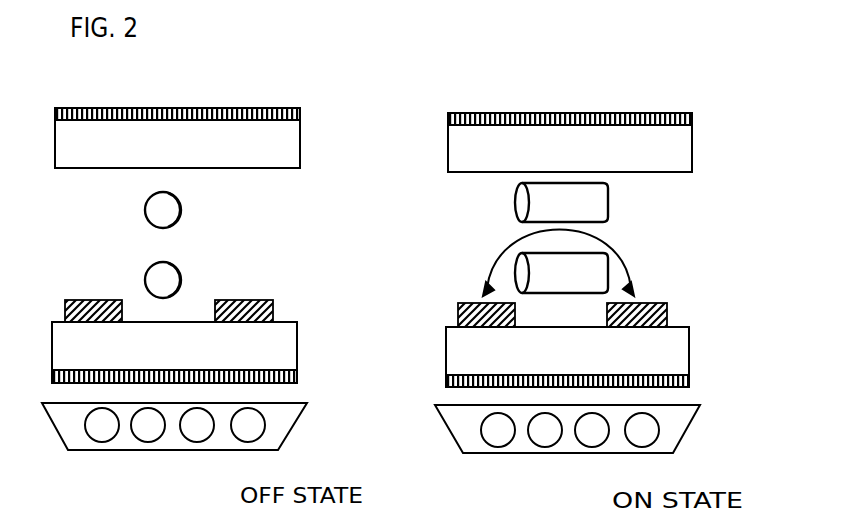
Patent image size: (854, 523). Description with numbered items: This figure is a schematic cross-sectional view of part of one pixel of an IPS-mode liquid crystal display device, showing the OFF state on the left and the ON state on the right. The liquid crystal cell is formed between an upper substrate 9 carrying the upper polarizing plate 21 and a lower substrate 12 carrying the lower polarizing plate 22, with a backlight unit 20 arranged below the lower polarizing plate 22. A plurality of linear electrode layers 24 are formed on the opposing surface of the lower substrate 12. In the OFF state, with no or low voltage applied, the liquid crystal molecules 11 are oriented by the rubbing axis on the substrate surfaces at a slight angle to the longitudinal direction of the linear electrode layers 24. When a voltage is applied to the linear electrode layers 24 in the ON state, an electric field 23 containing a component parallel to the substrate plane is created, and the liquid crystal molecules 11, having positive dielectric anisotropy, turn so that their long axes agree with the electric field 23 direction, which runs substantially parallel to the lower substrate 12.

The upper substrate of liquid crystal cell 9 is at (448, 160).
The upper polarizing plate 21 is at (443, 118).
The liquid crystal molecule 11 is at (197, 212).
The direction of applied electric field 23 is at (498, 252).
The linear electrode 24 is at (458, 306).
The lower substrate of liquid crystal cell 12 is at (446, 356).
The lower polarizing plate 22 is at (446, 383).
The backlight unit 20 is at (447, 436).